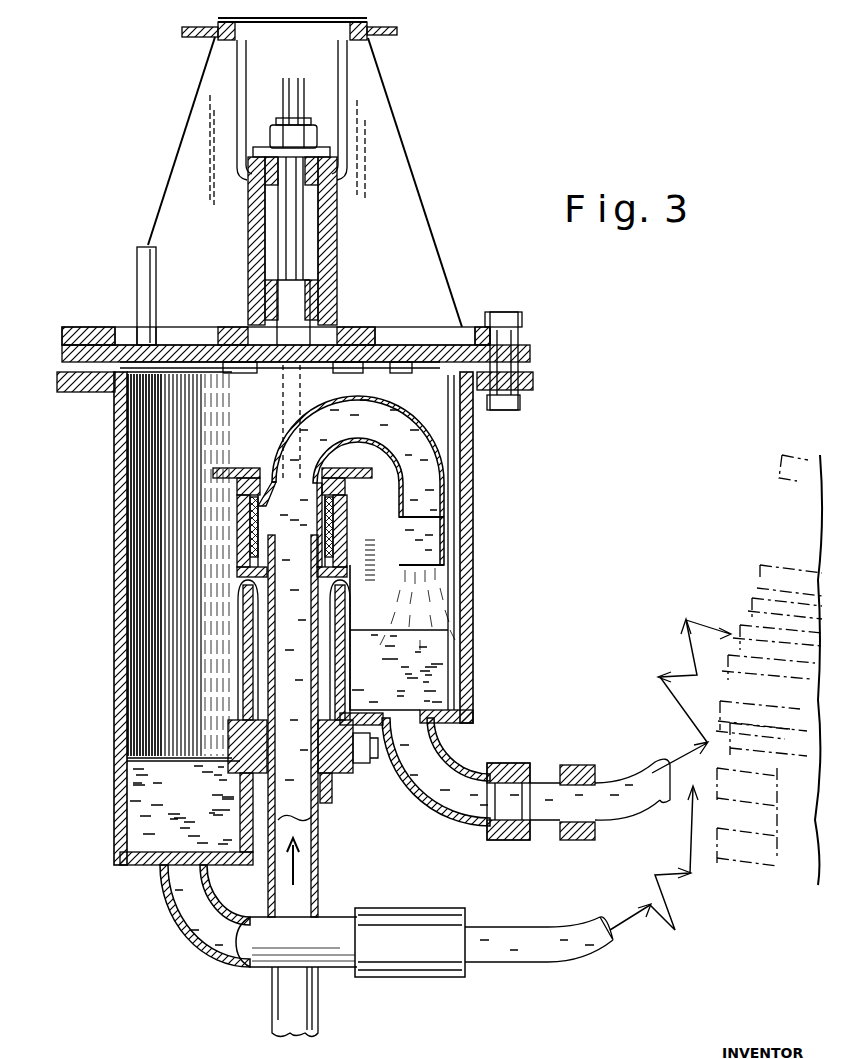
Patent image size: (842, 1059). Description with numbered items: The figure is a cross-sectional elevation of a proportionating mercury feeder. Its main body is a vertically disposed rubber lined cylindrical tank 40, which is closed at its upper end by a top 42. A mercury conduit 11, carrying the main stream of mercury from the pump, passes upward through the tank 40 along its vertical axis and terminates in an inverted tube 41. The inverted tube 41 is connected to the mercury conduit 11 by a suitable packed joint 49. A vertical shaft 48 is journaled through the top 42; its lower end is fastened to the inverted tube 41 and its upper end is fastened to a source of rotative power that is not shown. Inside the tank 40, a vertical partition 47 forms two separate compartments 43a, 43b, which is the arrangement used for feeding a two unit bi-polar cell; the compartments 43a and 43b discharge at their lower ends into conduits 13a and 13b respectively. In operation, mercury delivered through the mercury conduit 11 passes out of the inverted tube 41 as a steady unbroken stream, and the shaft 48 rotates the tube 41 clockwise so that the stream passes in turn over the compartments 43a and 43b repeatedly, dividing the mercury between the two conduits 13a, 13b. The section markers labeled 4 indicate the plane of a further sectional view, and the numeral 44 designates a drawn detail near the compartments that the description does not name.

The vertical shaft 48 is at (287, 257).
The top 42 is at (430, 345).
The section line 4- 4 is at (30, 345).
The rubber lined cylindrical tank 40 is at (473, 475).
The compartment 43b is at (152, 608).
The inverted tube 41 is at (396, 404).
The packed joint 49 is at (340, 522).
The vertical partition 47 is at (238, 607).
The seal 44 is at (243, 681).
The compartment 43a is at (440, 688).
The conduit 13a is at (635, 773).
The conduit 13b is at (533, 925).
The mercury conduit 11 is at (320, 835).